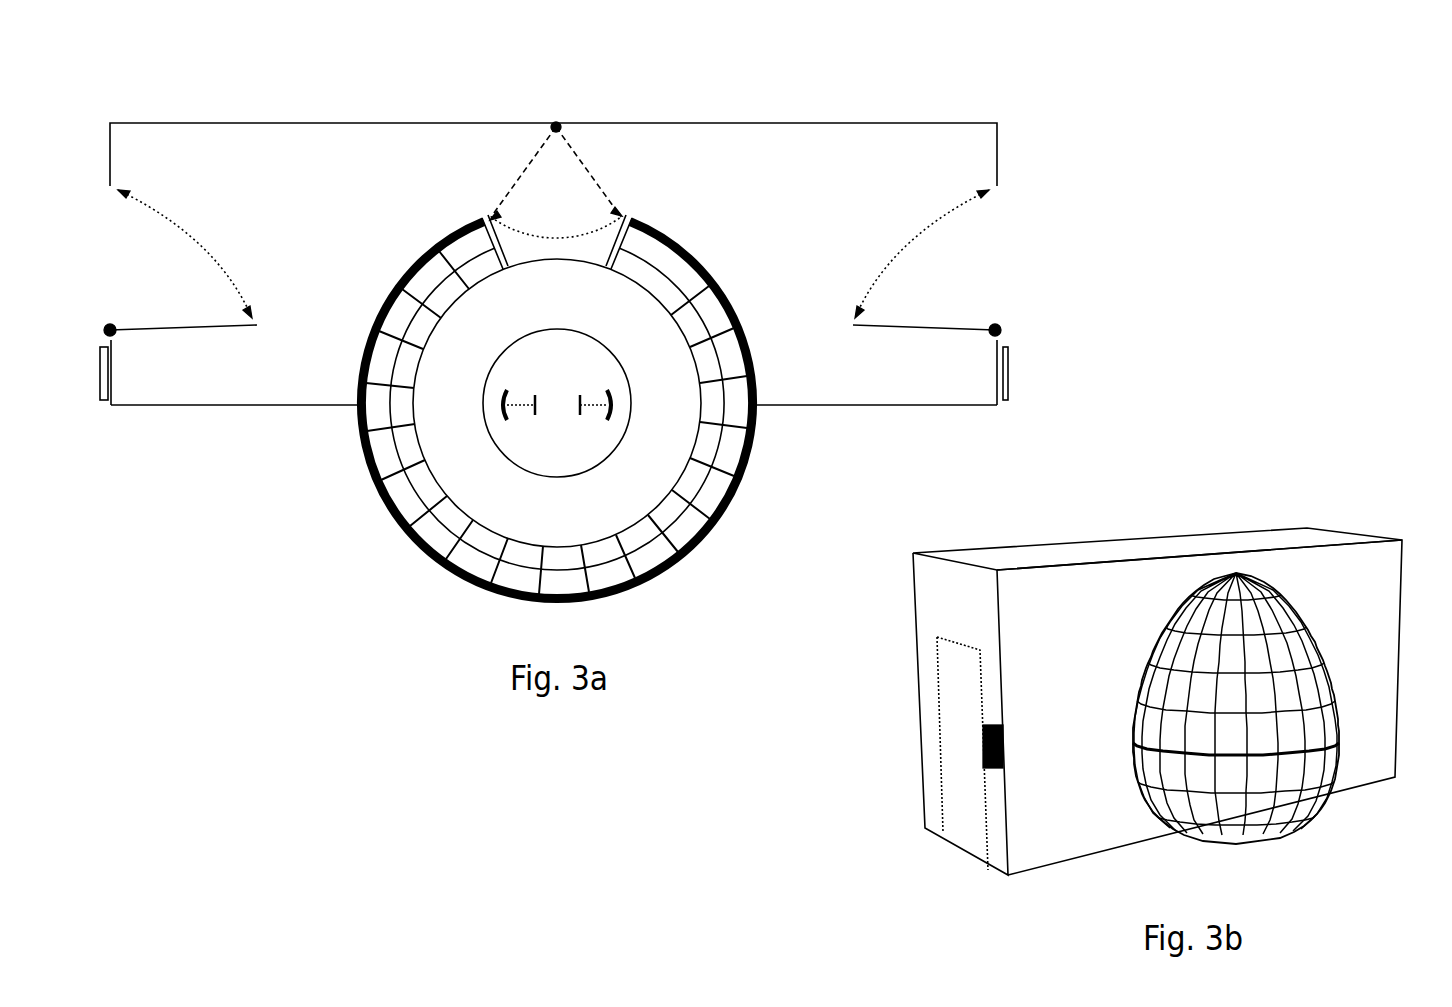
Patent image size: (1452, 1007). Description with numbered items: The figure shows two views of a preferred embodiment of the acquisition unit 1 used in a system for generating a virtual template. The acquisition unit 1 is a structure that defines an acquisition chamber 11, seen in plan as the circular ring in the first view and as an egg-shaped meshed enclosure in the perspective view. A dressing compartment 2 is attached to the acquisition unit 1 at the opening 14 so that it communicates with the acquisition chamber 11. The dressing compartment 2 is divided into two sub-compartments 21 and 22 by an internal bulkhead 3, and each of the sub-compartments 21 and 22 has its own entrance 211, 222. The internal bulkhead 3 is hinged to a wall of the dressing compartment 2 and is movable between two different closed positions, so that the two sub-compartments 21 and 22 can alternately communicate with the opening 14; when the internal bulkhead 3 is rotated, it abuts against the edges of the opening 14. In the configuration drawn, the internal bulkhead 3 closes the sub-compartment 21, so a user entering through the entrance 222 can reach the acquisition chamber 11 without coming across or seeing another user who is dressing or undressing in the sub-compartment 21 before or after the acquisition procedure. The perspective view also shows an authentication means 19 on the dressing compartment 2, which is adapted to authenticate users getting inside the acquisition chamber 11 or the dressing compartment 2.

In FIG. 3A, the acquisition unit 1 is at (437, 585).
In FIG. 3B, the acquisition unit 1 is at (1307, 600).
In FIG. 3A, the acquisition chamber 11 is at (627, 500).
In FIG. 3A, the opening 14 is at (565, 250).
In FIG. 3A, the internal bulkhead 3 is at (525, 168).
In FIG. 3A, the dressing compartment 2 is at (913, 418).
In FIG. 3B, the dressing compartment 2 is at (1255, 527).
In FIG. 3A, the sub-compartment 21 is at (203, 403).
In FIG. 3A, the sub-compartment 22 is at (952, 122).
In FIG. 3A, the entrance 211 is at (130, 267).
In FIG. 3A, the entrance 222 is at (987, 265).
In FIG. 3B, the authentication means 19 is at (983, 758).